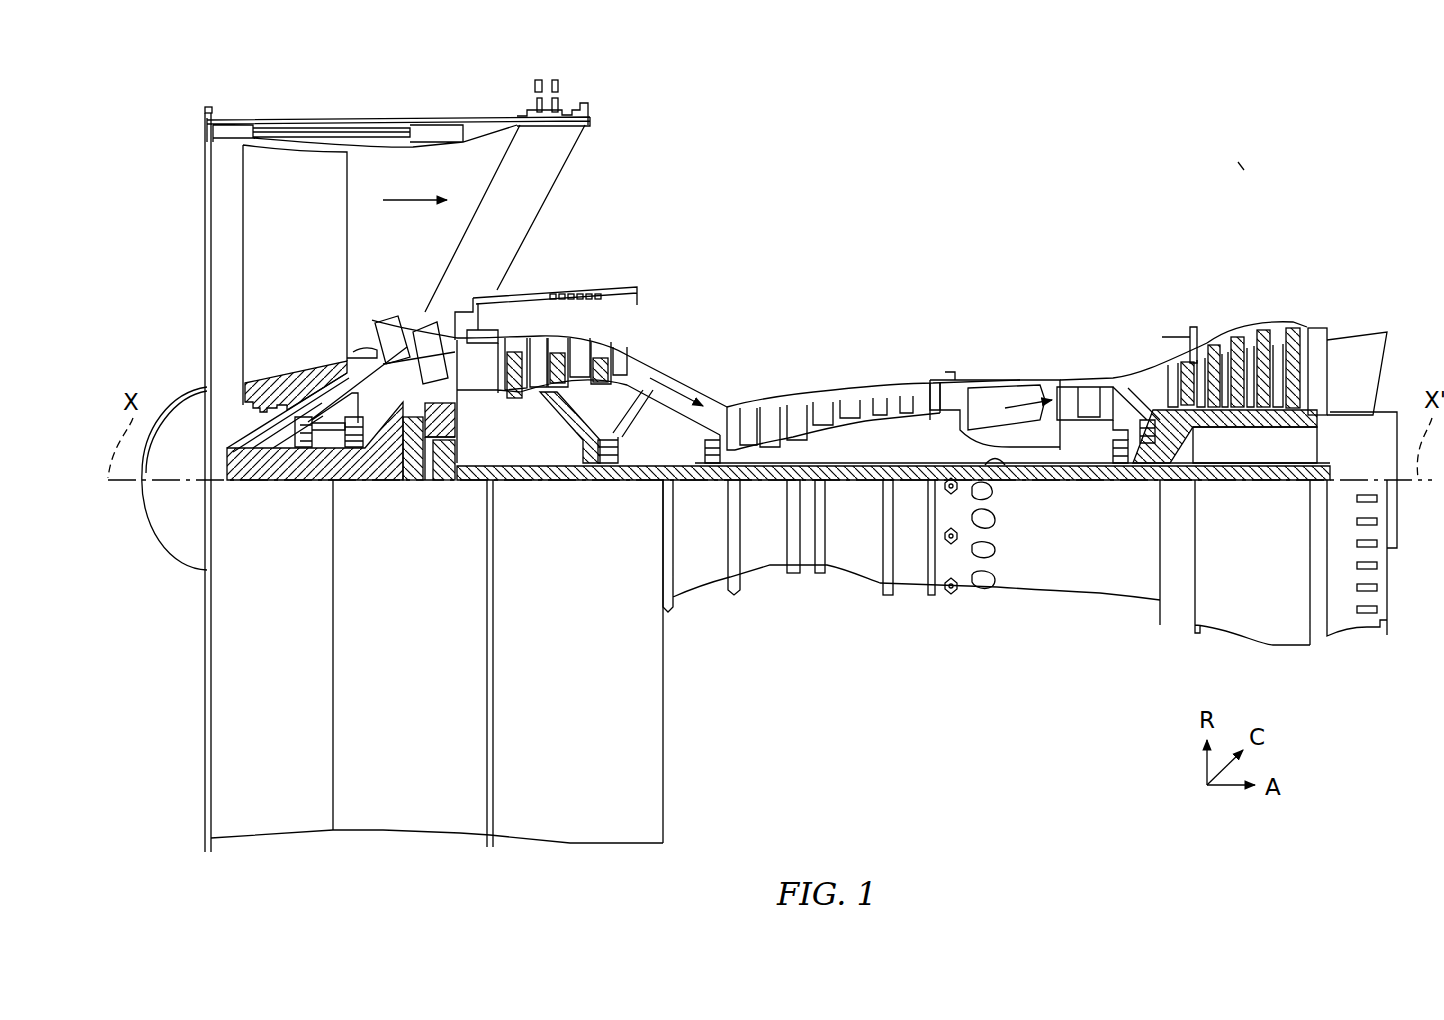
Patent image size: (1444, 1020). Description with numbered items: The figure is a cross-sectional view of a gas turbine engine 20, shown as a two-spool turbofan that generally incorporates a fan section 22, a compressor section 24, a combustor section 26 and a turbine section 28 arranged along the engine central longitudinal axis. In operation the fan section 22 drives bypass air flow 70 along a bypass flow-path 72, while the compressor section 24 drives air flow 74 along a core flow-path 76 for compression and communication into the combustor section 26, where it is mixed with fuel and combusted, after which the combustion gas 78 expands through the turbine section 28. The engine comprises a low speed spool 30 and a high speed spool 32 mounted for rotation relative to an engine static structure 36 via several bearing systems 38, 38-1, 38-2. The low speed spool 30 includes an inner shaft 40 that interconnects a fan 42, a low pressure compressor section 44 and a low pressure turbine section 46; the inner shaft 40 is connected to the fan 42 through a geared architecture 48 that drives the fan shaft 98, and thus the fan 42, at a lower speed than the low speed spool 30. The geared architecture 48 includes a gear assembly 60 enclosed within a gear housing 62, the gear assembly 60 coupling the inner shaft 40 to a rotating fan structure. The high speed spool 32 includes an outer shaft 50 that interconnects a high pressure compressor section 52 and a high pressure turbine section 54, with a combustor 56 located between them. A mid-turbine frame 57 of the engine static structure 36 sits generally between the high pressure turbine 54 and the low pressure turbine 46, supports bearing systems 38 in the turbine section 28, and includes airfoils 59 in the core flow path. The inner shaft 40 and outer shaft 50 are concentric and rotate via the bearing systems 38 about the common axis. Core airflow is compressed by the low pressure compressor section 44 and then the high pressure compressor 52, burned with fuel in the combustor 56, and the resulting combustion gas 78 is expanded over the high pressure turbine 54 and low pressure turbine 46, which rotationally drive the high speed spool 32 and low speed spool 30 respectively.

The gas turbine engine 20 is at (1240, 176).
The fan section 22 is at (487, 92).
The compressor section 24 is at (497, 250).
The combustor section 26 is at (1062, 250).
The turbine section 28 is at (1320, 250).
The low speed spool 30 is at (857, 503).
The high speed spool 32 is at (910, 445).
The engine static structure 36 is at (195, 846).
The bearing system 38 is at (1134, 468).
The bearing system 38-1 is at (305, 447).
The bearing system 38-2 is at (603, 465).
The inner shaft 40 is at (708, 482).
The fan 42 is at (307, 257).
The low pressure compressor section 44 is at (580, 357).
The low pressure turbine section 46 is at (1248, 360).
The geared architecture 48 is at (453, 497).
The outer shaft 50 is at (983, 466).
The high pressure compressor section 52 is at (830, 405).
The high pressure turbine section 54 is at (1082, 385).
The combustor 56 is at (1000, 400).
The mid-turbine frame 57 is at (1120, 372).
The airfoils 59 is at (1150, 365).
The gear assembly 60 is at (452, 452).
The gear housing 62 is at (457, 413).
The bypass air flow 70 is at (398, 197).
The bypass flow-path 72 is at (413, 262).
The air flow 74 is at (700, 388).
The core flow-path 76 is at (365, 333).
The combustion gas 78 is at (1030, 385).
The fan shaft 98 is at (380, 482).